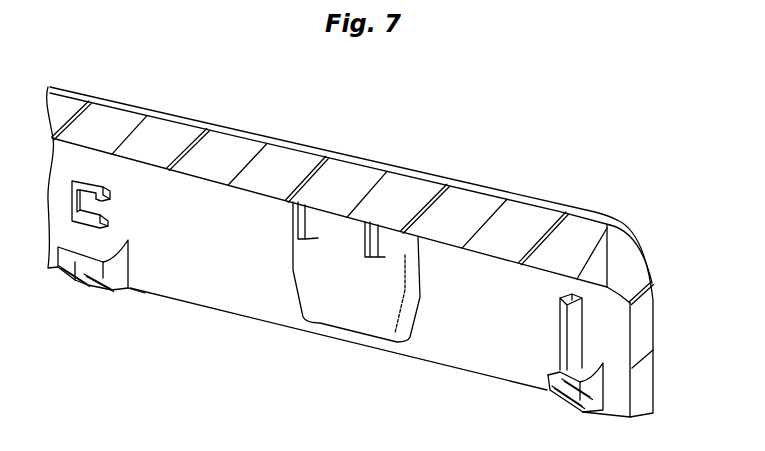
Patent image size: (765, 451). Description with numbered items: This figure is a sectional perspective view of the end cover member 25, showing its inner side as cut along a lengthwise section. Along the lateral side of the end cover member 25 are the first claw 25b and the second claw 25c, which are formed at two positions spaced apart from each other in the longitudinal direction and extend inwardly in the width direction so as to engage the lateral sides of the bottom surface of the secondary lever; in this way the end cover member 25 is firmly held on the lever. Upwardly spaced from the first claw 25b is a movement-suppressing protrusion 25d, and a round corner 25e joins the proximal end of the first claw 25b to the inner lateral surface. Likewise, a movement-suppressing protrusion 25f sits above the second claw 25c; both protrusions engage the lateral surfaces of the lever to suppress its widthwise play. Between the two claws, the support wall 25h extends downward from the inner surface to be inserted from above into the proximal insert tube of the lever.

The end cover member 25 is at (532, 203).
The first claw 25b is at (75, 284).
The second claw 25c is at (566, 413).
The movement-suppressing protrusion 25d is at (108, 220).
The round corner 25e is at (118, 249).
The movement-suppressing protrusion 25f is at (560, 325).
The support wall 25h is at (345, 315).